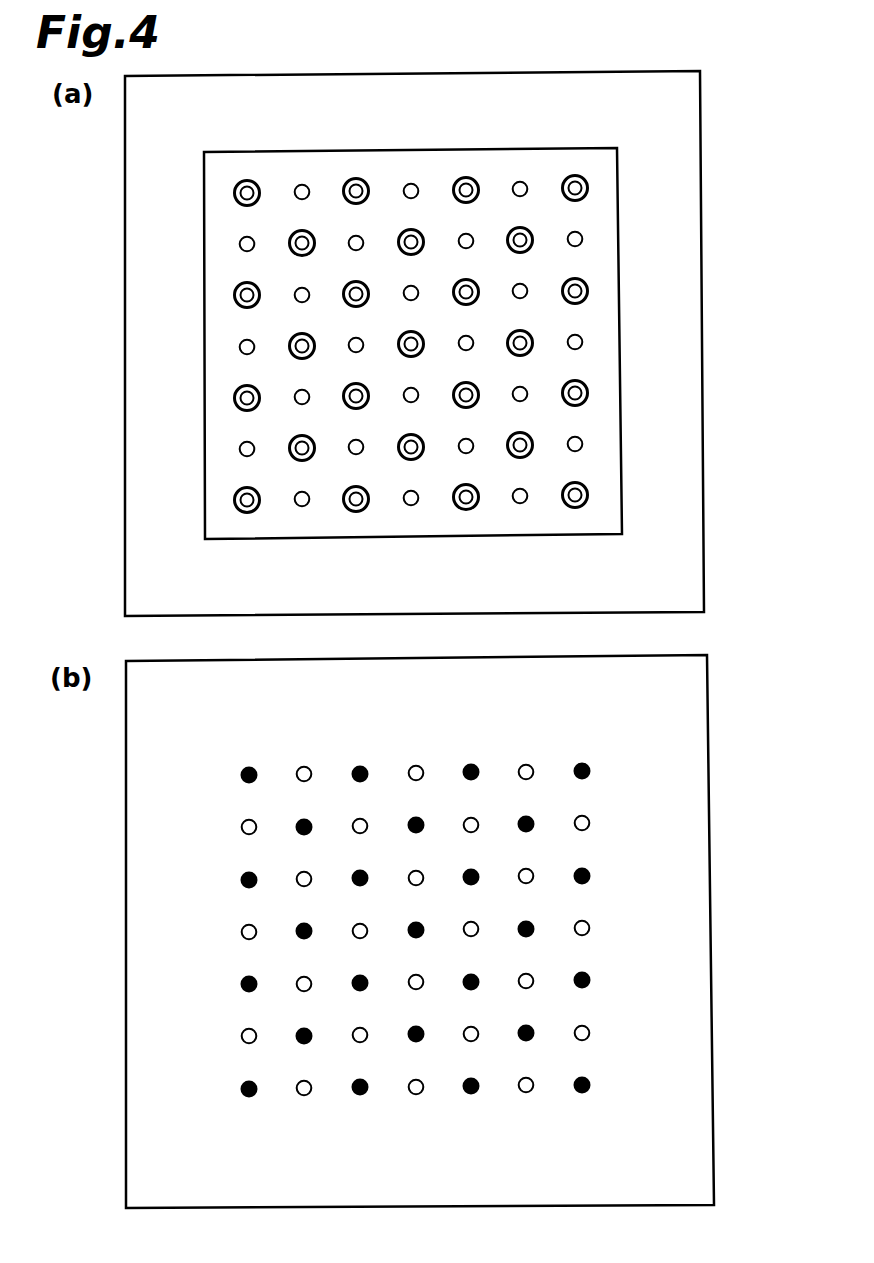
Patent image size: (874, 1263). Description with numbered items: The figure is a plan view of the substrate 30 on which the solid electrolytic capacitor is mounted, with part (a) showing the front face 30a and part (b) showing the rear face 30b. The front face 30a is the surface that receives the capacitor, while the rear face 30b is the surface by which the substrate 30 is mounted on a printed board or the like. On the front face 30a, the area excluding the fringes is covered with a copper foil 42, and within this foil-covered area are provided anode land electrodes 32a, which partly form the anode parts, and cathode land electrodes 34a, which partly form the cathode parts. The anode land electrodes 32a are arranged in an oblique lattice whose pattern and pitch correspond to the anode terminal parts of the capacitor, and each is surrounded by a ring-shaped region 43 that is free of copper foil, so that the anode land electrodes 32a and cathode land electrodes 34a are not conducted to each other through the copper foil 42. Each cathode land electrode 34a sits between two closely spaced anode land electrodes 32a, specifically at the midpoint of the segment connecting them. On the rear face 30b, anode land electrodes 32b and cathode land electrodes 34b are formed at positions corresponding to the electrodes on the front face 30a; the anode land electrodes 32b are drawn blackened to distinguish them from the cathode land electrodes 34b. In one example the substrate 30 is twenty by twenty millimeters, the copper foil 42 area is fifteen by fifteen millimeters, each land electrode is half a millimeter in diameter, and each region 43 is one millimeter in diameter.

The substrate 30 is at (466, 639).
The front face 30a is at (678, 189).
The rear face 30b is at (688, 772).
The copper foil 42 is at (605, 251).
The ring-shaped regions 43 is at (588, 286).
The anode land electrodes 32a is at (588, 296).
The cathode land electrodes 34a is at (583, 344).
The anode land electrodes 32b is at (590, 878).
The cathode land electrodes 34b is at (589, 927).